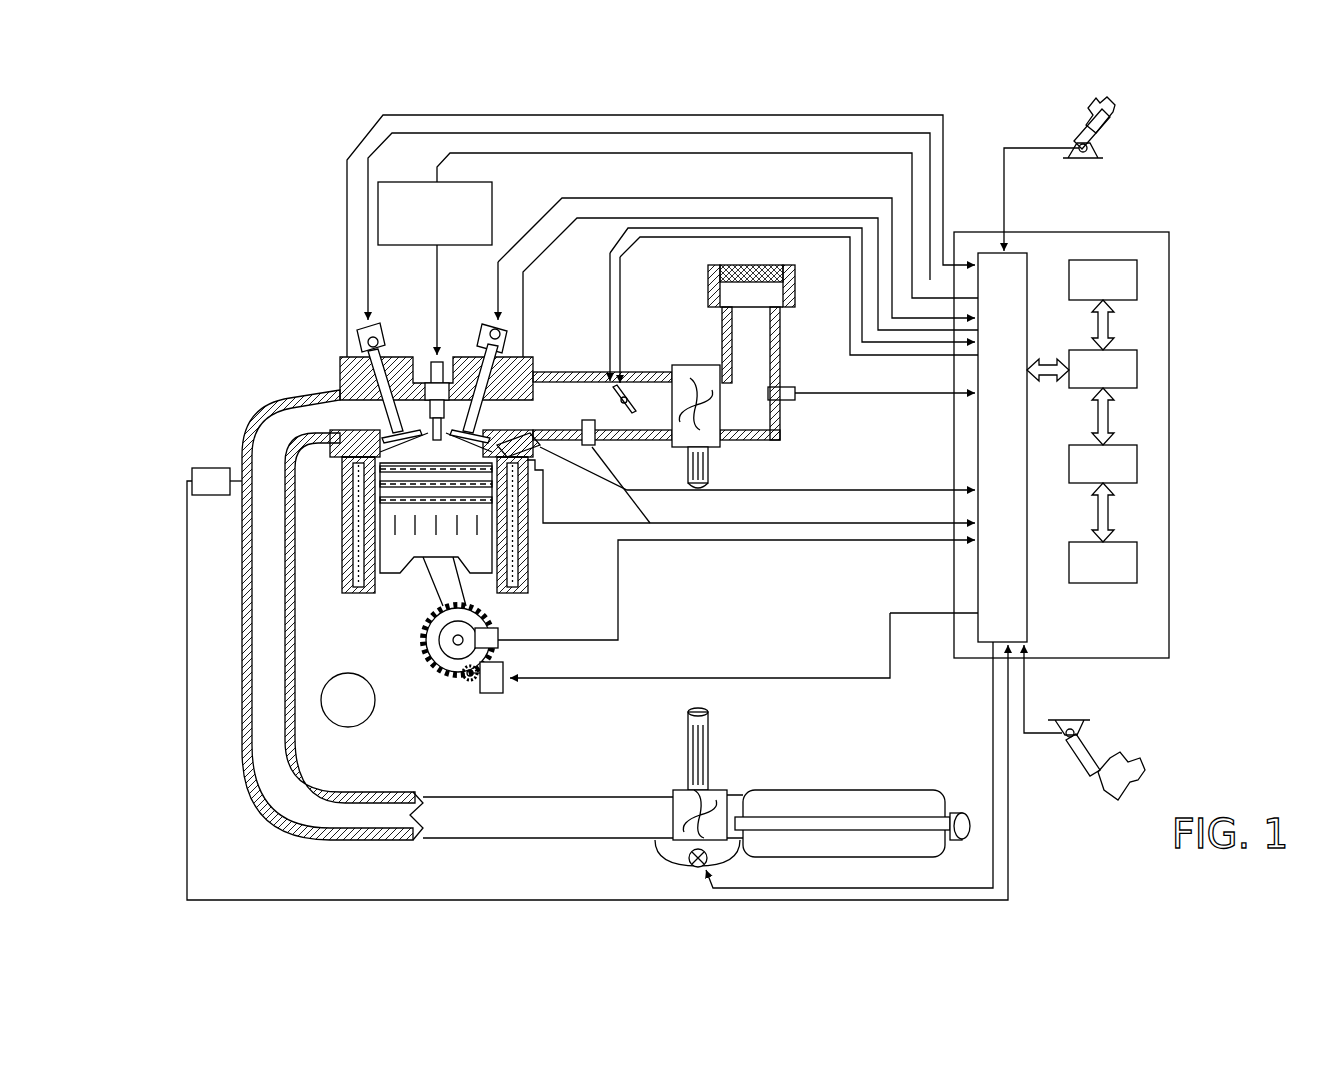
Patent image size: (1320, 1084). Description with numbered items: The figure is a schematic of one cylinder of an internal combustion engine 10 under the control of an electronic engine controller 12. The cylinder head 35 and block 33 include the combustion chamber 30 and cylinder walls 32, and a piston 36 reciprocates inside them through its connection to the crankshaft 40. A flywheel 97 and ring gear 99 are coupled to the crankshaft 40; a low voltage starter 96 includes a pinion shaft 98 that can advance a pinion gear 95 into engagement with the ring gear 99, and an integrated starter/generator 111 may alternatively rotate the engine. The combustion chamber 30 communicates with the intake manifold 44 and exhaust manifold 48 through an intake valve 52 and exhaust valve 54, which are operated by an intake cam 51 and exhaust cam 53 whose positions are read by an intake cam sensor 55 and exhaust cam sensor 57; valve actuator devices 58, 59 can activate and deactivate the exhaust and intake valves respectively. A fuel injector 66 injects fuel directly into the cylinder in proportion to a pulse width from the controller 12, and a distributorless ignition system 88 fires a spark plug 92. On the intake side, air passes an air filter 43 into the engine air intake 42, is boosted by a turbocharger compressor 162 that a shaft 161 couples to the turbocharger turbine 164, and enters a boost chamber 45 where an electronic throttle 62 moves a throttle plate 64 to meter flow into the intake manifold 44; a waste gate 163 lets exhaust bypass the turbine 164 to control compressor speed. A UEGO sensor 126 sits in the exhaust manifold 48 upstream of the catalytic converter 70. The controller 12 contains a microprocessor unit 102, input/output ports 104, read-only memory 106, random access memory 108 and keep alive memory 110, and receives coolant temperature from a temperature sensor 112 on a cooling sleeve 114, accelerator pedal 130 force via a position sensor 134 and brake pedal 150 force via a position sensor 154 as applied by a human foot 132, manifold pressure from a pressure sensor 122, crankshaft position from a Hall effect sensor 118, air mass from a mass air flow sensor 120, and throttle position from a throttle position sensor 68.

The internal combustion engine 10 is at (290, 325).
The electronic engine controller 12 is at (1169, 233).
The combustion chamber 30 is at (433, 448).
The cylinder walls 32 is at (378, 585).
The block 33 is at (340, 500).
The cylinder head 35 is at (338, 360).
The piston 36 is at (418, 545).
The crankshaft 40 is at (448, 662).
The engine air intake 42 is at (700, 300).
The air filter 43 is at (765, 282).
The intake manifold 44 is at (534, 418).
The boost chamber 45 is at (672, 405).
The exhaust manifold 48 is at (320, 426).
The intake cam 51 is at (492, 318).
The intake valve 52 is at (477, 417).
The exhaust cam 53 is at (377, 313).
The exhaust valve 54 is at (387, 423).
The intake cam sensor 55 is at (513, 333).
The exhaust cam sensor 57 is at (360, 343).
The valve actuator device 58 is at (383, 337).
The valve actuator device 59 is at (490, 337).
The electronic throttle 62 is at (632, 403).
The throttle plate 64 is at (622, 408).
The fuel injector 66 is at (545, 470).
The throttle position sensor 68 is at (610, 378).
The catalytic converter 70 is at (790, 790).
The distributorless ignition system 88 is at (390, 182).
The spark plug 92 is at (440, 355).
The pinion gear 95 is at (492, 697).
The starter 96 is at (500, 690).
The flywheel 97 is at (435, 648).
The pinion shaft 98 is at (470, 692).
The ring gear 99 is at (462, 688).
The microprocessor unit 102 is at (1137, 368).
The input/output ports 104 is at (1027, 262).
The read-only memory 106 is at (1137, 278).
The random access memory 108 is at (1137, 462).
The keep alive memory 110 is at (1137, 560).
The integrated starter/generator 111 is at (348, 700).
The temperature sensor 112 is at (543, 498).
The cooling sleeve 114 is at (515, 565).
The Hall effect sensor 118 is at (498, 632).
The mass air flow sensor 120 is at (795, 388).
The pressure sensor 122 is at (596, 440).
The Universal Exhaust Gas Oxygen sensor 126 is at (192, 478).
The accelerator pedal 130 is at (1075, 130).
The human foot 132 is at (1112, 110).
The position sensor 134 is at (1095, 148).
The brake pedal 150 is at (1100, 775).
The position sensor 154 is at (1066, 735).
The shaft 161 is at (688, 470).
The turbocharger compressor 162 is at (706, 425).
The waste gate 163 is at (690, 866).
The turbocharger turbine 164 is at (678, 790).